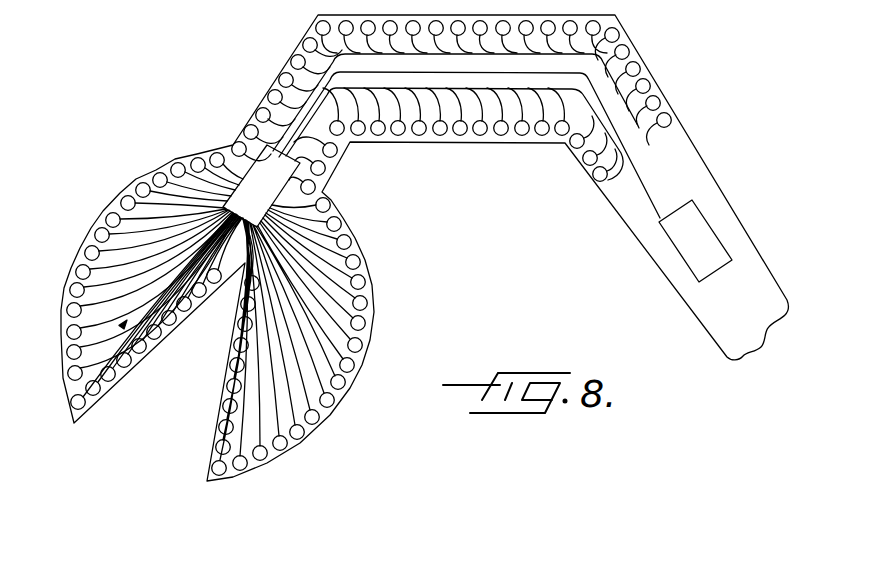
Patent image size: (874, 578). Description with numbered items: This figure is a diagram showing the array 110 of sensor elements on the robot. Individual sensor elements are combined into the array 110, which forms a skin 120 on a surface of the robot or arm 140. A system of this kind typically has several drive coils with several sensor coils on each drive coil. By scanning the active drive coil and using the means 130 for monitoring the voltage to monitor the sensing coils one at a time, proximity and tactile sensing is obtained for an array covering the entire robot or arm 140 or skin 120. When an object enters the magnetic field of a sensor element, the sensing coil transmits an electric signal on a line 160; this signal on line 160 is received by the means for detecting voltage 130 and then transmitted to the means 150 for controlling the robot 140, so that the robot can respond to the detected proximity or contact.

The array 110 is at (210, 424).
The skin 120 is at (368, 352).
The means for monitoring the voltage 130 is at (328, 194).
The robot or arm 140 is at (268, 63).
The means for controlling the robot 150 is at (712, 218).
The line 160 is at (138, 185).